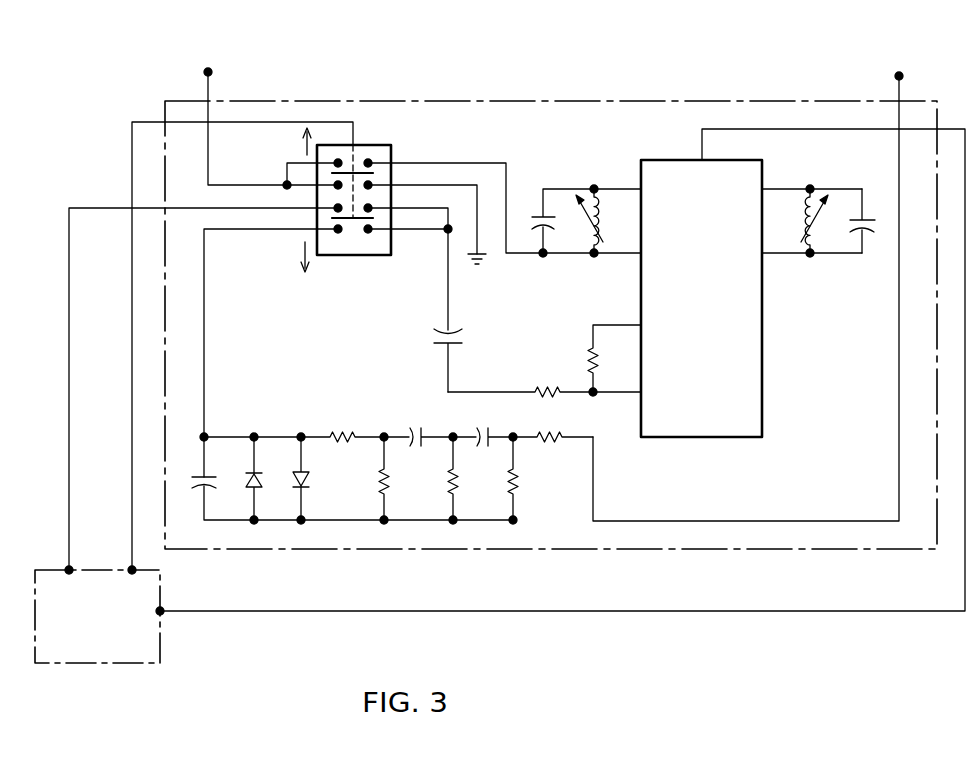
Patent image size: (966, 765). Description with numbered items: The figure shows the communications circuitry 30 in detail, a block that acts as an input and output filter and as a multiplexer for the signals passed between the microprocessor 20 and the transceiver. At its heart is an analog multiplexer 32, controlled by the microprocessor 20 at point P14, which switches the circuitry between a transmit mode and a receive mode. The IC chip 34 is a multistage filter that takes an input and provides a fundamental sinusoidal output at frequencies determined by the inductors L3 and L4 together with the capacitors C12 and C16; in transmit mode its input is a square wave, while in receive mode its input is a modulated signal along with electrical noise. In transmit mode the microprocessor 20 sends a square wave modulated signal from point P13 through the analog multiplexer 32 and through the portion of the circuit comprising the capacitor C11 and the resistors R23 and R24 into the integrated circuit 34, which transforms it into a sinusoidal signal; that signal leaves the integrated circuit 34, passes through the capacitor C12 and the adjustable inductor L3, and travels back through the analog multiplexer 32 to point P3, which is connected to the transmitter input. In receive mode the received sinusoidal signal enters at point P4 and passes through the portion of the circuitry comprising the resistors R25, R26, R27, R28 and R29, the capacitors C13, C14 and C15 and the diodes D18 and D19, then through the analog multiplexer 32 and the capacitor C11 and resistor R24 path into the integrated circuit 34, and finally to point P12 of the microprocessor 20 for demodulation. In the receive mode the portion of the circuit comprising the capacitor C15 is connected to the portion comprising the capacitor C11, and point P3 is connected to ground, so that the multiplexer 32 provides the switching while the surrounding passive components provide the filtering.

The communications circuitry 30 is at (571, 88).
The microprocessor 20 is at (162, 655).
The analog multiplexer 32 is at (382, 145).
The IC chip 34 is at (763, 331).
The point P3 is at (206, 69).
The point P4 is at (895, 72).
The point P12 is at (157, 611).
The point P13 is at (70, 575).
The point P14 is at (132, 575).
The capacitor C11 is at (433, 337).
The capacitor C12 is at (537, 217).
The capacitor C13 is at (488, 422).
The capacitor C14 is at (422, 420).
The capacitor C15 is at (193, 480).
The capacitor C16 is at (879, 222).
The adjustable inductor L3 is at (598, 213).
The inductor L4 is at (805, 216).
The resistor R23 is at (547, 381).
The resistor R24 is at (584, 359).
The resistor R25 is at (556, 428).
The resistor R26 is at (518, 474).
The resistor R27 is at (460, 474).
The resistor R28 is at (391, 474).
The resistor R29 is at (338, 426).
The diode D18 is at (257, 478).
The diode D19 is at (309, 480).